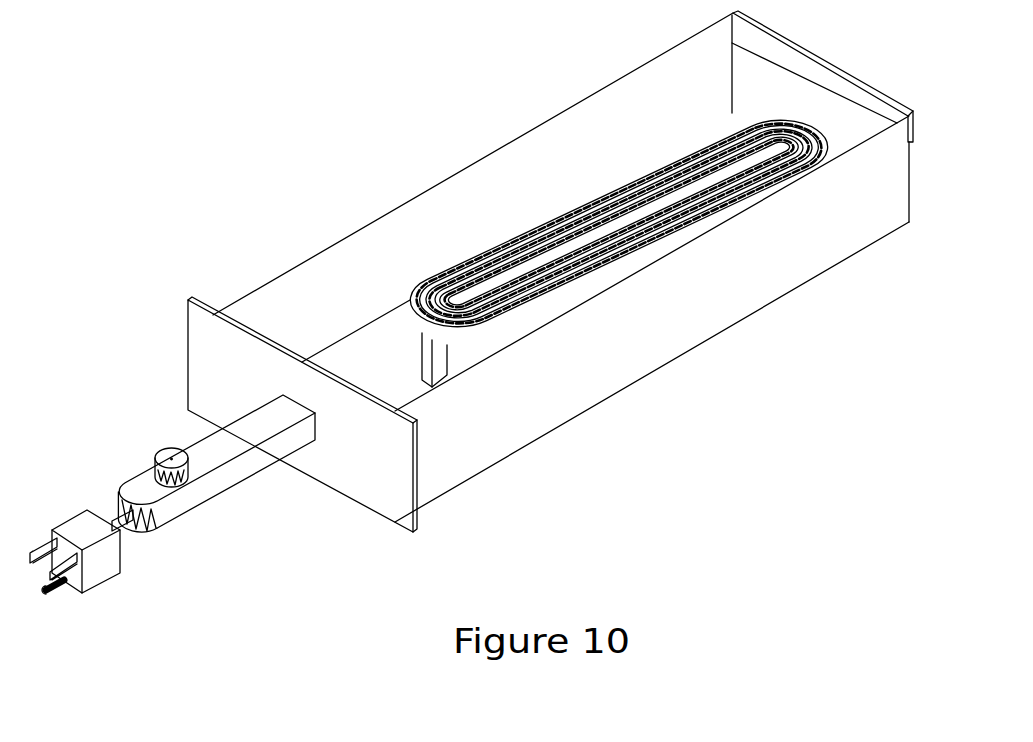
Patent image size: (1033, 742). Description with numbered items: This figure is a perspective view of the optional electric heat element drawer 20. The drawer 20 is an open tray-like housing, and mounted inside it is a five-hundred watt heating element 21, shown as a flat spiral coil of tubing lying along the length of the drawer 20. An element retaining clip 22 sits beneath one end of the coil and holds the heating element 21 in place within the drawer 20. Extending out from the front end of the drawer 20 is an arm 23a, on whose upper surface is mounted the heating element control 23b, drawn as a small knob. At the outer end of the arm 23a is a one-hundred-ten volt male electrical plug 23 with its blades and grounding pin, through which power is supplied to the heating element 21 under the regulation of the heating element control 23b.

The electric heat element drawer 20 is at (455, 438).
The heating element 21 is at (573, 202).
The element retaining clip 22 is at (432, 358).
The male electrical plug 23 is at (122, 546).
The connector arm 23a is at (197, 445).
The heating element control 23b is at (160, 451).